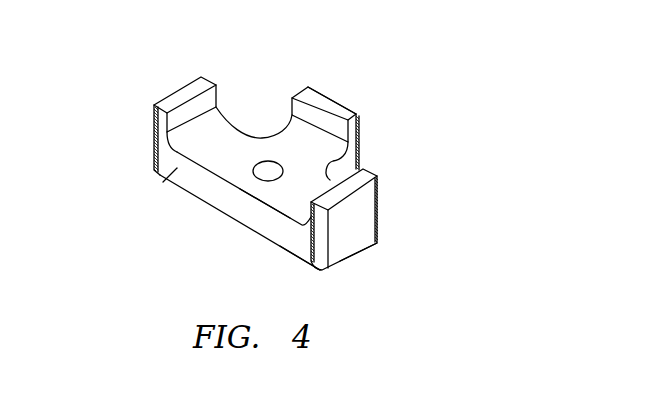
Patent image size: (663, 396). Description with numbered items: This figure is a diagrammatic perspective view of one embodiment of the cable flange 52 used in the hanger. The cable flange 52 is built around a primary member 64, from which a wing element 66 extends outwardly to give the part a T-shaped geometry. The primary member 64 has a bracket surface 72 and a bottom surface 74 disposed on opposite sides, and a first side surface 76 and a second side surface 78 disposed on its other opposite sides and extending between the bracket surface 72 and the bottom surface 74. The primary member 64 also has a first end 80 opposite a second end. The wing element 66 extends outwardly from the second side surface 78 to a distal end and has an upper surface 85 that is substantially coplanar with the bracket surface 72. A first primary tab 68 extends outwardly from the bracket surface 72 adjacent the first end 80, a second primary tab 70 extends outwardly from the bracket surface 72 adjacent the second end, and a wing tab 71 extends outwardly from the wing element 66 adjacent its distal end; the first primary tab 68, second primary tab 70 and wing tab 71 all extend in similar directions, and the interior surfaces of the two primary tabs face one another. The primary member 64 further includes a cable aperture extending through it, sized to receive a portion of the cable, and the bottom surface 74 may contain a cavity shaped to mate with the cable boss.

The cable flange 52 is at (405, 163).
The primary member 64 is at (209, 199).
The wing element 66 is at (280, 121).
The first primary tab 68 is at (360, 206).
The second primary tab 70 is at (153, 124).
The wing tab 71 is at (348, 106).
The bracket surface 72 is at (287, 203).
The bottom surface 74 is at (299, 254).
The first side surface 76 is at (166, 181).
The second side surface 78 is at (251, 120).
The first end 80 is at (363, 249).
The upper surface 85 is at (297, 157).